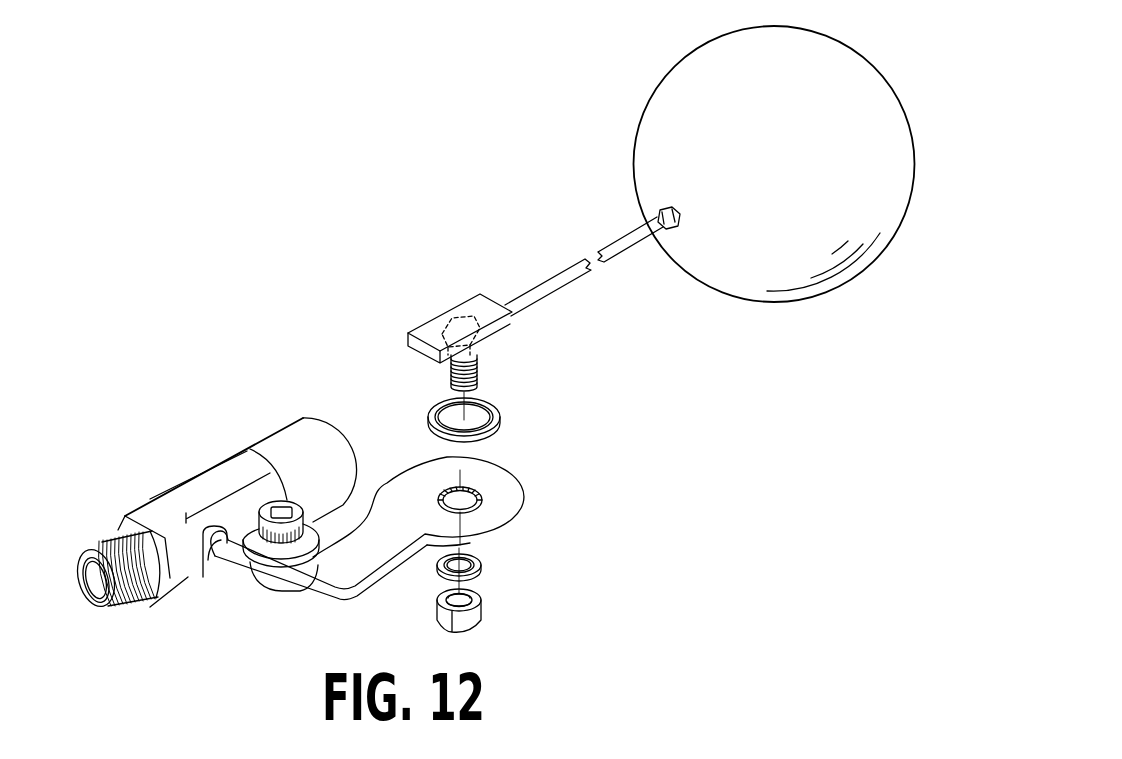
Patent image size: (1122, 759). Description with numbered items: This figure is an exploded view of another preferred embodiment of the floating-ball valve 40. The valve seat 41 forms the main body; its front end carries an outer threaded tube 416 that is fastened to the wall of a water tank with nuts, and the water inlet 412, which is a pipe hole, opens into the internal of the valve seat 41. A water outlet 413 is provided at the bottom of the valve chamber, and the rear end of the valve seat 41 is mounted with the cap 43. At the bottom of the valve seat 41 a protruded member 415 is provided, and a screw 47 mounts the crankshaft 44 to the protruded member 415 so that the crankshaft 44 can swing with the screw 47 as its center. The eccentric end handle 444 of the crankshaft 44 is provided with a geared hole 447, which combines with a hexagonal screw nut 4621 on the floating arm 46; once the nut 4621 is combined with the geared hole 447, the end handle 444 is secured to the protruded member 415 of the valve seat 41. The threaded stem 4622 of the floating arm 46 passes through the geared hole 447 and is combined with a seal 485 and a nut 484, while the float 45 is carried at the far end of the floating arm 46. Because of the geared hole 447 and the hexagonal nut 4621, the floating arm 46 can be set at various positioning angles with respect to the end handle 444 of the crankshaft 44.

The floating-ball valve 40 is at (267, 372).
The valve seat 41 is at (209, 518).
The water inlet 412 is at (110, 592).
The water outlet 413 is at (205, 568).
The protruded member 415 is at (277, 583).
The outer threaded tube 416 is at (106, 544).
The cap 43 is at (313, 437).
The crankshaft 44 is at (400, 538).
The eccentric end handle 444 is at (507, 498).
The geared hole 447 is at (473, 495).
The float 45 is at (851, 72).
The floating arm 46 is at (544, 313).
The hexagonal screw nut 4621 is at (487, 338).
The threaded stem 4622 is at (478, 368).
The screw 47 is at (288, 512).
The nut 484 is at (483, 594).
The seal 485 is at (500, 418).